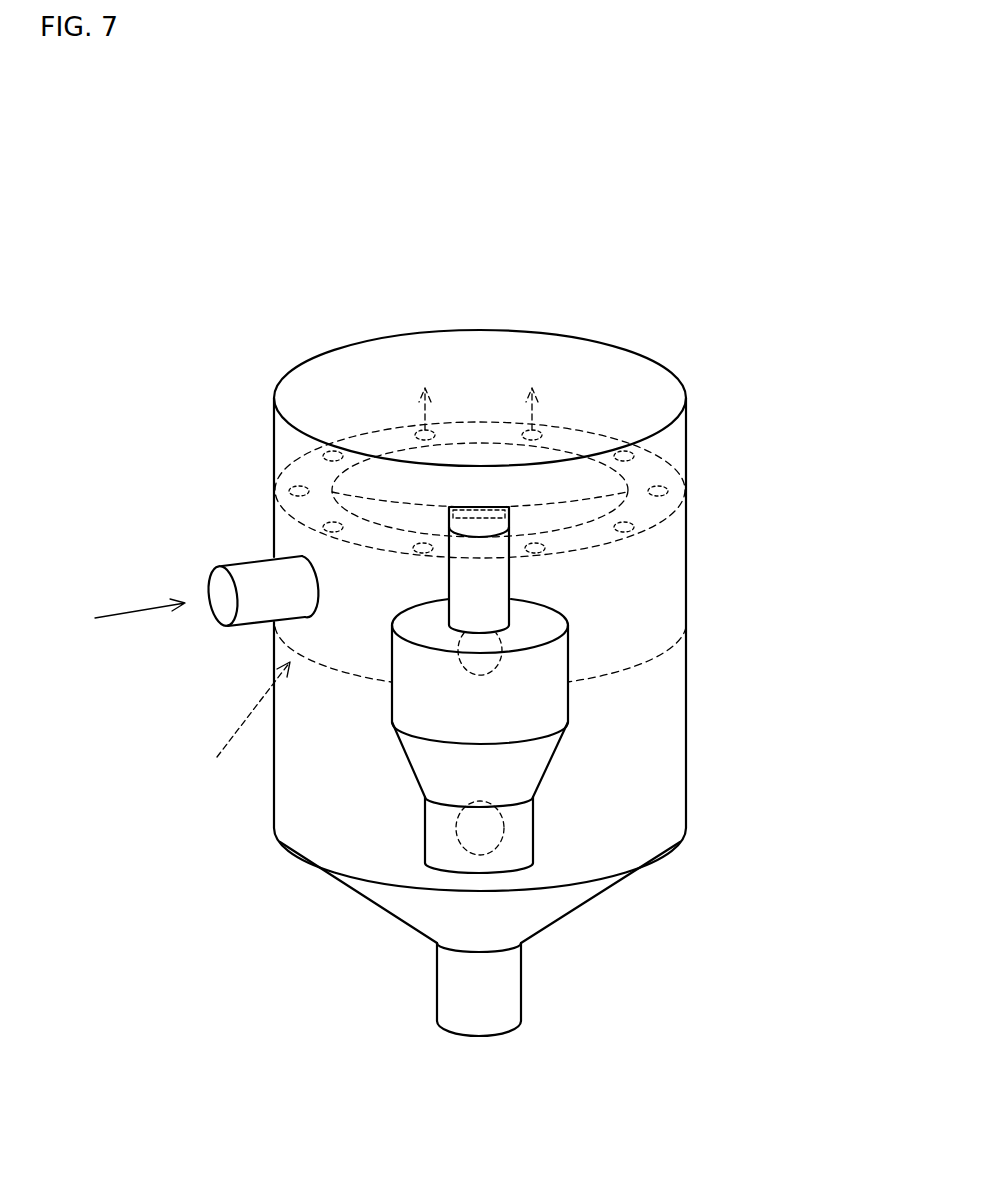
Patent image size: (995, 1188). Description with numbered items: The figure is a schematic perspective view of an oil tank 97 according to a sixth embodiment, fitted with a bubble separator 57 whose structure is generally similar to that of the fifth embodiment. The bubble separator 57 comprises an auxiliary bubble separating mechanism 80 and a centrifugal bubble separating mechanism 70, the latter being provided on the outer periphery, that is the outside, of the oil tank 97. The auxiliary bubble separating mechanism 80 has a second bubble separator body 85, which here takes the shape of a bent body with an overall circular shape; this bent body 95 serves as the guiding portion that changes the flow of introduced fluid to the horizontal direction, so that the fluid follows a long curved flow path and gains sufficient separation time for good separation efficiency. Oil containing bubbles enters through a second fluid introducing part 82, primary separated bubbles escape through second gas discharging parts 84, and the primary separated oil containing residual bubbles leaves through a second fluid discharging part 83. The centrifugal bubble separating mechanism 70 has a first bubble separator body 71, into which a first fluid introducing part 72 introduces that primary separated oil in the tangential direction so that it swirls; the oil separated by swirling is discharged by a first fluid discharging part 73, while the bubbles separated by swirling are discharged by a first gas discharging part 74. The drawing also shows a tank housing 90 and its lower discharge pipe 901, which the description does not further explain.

The oil tank 97 is at (700, 393).
The housing 90 is at (687, 778).
The discharge pipe 901 is at (503, 998).
The second fluid introducing part 82 is at (253, 610).
The second bubble separator body 85 is at (668, 560).
The bent body 95 is at (567, 491).
The first gas discharging part 74 is at (282, 476).
The second gas discharging parts 84 is at (417, 428).
The auxiliary bubble separating mechanism 80 is at (257, 483).
The first fluid introducing part 72 is at (511, 600).
The second fluid discharging part 83 is at (654, 570).
The centrifugal bubble separating mechanism 70 is at (546, 798).
The first bubble separator body 71 is at (568, 697).
The first fluid discharging part 73 is at (467, 850).
The bubble separator 57 is at (377, 728).